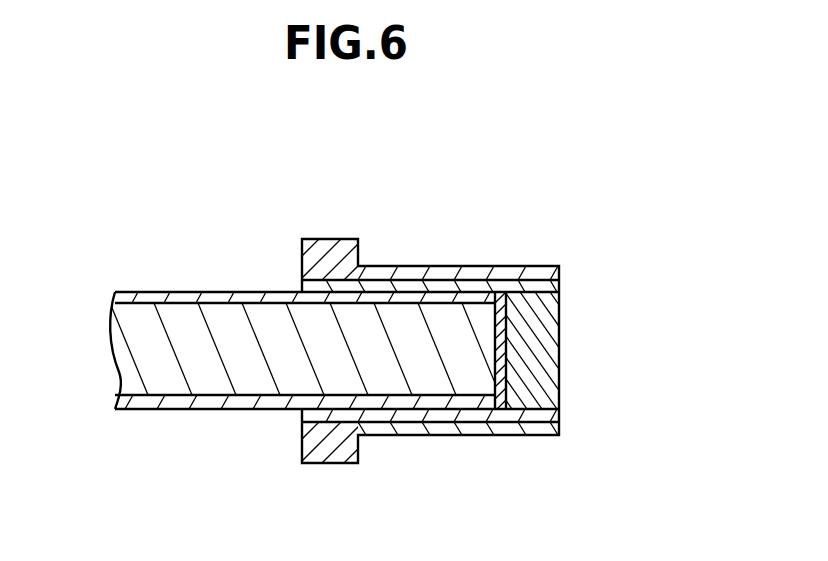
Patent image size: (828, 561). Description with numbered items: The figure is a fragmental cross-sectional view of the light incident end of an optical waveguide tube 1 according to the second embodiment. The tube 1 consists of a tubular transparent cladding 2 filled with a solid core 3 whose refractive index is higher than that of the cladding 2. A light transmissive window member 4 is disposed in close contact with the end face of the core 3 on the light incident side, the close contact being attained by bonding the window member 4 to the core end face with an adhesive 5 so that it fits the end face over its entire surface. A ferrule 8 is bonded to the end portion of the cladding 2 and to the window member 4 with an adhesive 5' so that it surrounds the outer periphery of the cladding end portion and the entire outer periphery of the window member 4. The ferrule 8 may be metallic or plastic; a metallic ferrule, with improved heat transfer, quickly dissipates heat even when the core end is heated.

The optical waveguide tube 1 is at (218, 270).
The tubular transparent cladding 2 is at (270, 292).
The solid core 3 is at (193, 382).
The light transmissive window member 4 is at (533, 317).
The adhesive 5 is at (572, 351).
The adhesive 5' is at (425, 400).
The ferrule 8 is at (405, 430).